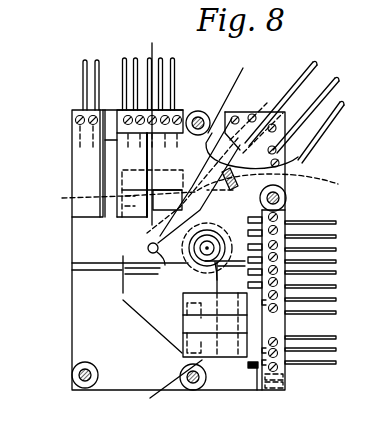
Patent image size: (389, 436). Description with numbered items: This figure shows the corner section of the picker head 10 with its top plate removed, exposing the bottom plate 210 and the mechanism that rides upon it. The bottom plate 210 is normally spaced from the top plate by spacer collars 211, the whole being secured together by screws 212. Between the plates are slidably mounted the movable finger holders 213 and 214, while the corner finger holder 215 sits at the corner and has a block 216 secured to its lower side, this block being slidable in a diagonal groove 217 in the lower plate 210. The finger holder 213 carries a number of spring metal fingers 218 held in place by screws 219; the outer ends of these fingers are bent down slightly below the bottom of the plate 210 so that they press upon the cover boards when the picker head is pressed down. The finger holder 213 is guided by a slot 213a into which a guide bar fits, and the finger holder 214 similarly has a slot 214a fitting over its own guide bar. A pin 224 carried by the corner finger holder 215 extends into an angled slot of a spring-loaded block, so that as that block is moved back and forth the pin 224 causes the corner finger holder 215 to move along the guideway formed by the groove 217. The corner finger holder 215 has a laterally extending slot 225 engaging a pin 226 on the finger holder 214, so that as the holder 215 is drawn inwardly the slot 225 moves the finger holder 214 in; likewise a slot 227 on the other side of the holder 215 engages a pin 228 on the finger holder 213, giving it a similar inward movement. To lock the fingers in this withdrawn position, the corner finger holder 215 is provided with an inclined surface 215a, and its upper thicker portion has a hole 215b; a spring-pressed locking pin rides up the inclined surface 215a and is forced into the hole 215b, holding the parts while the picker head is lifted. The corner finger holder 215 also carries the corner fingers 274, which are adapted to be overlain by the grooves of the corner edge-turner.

The control module 10 is at (196, 32).
The bottom plate 210 is at (80, 338).
The spacer collar 211 is at (196, 110).
The screw 212 is at (228, 100).
The finger holder 213 is at (256, 370).
The slot 213a is at (257, 323).
The finger holder 214 is at (92, 137).
The slot 214a is at (108, 148).
The corner finger holder 215 is at (285, 155).
The inclined surface 215a is at (291, 61).
The hole 215b is at (340, 134).
The block 216 is at (216, 184).
The diagonal groove 217 is at (150, 245).
The spring metal fingers 218 is at (122, 62).
The screw 219 is at (276, 309).
The pin 224 is at (166, 255).
The laterally extending slot 225 is at (195, 158).
The pin 226 is at (122, 198).
The slot 227 is at (183, 323).
The pin 228 is at (183, 355).
The corner fingers 274 is at (322, 72).